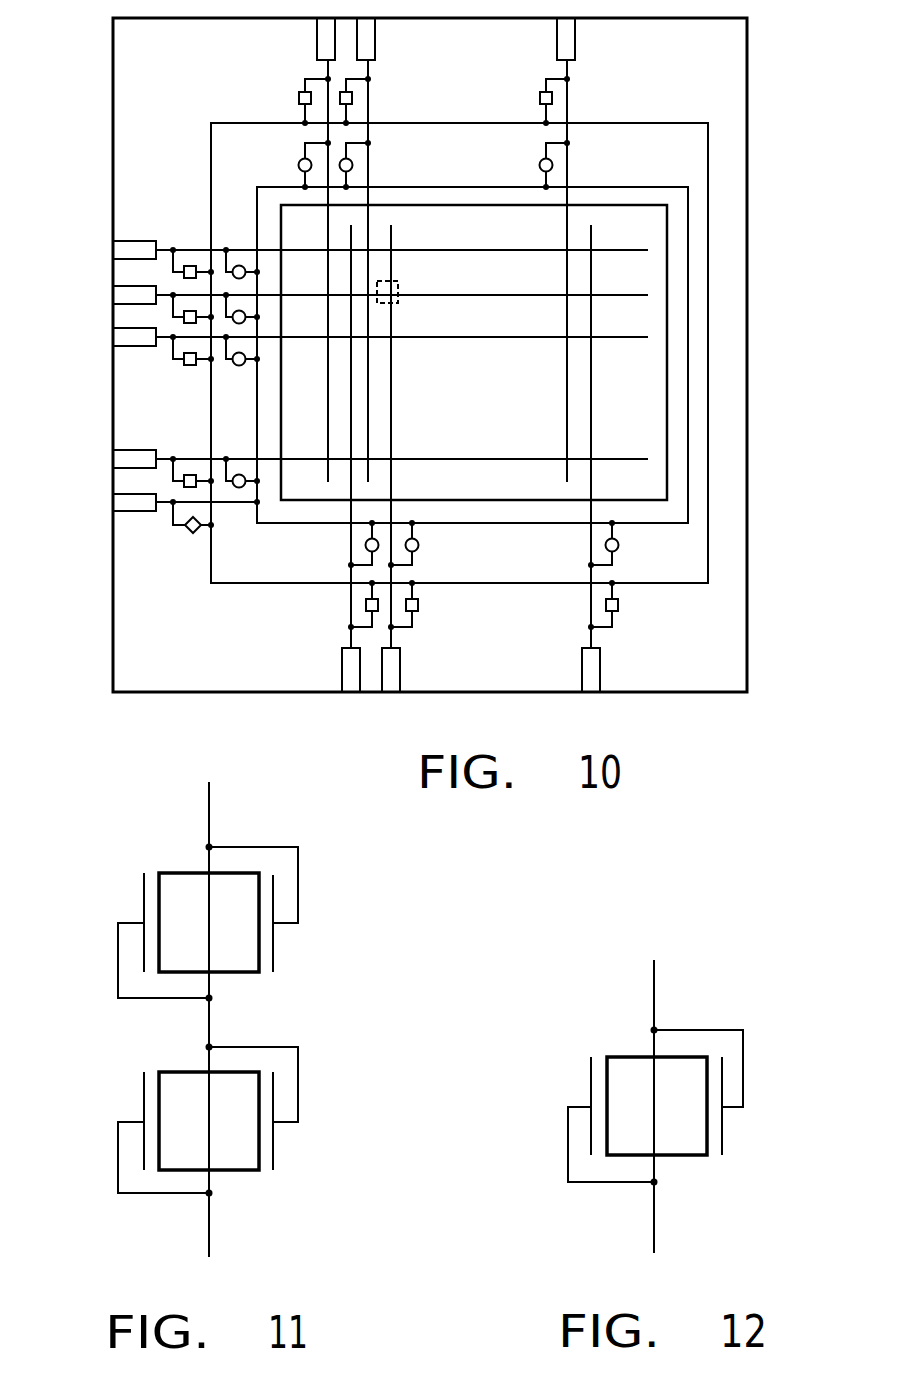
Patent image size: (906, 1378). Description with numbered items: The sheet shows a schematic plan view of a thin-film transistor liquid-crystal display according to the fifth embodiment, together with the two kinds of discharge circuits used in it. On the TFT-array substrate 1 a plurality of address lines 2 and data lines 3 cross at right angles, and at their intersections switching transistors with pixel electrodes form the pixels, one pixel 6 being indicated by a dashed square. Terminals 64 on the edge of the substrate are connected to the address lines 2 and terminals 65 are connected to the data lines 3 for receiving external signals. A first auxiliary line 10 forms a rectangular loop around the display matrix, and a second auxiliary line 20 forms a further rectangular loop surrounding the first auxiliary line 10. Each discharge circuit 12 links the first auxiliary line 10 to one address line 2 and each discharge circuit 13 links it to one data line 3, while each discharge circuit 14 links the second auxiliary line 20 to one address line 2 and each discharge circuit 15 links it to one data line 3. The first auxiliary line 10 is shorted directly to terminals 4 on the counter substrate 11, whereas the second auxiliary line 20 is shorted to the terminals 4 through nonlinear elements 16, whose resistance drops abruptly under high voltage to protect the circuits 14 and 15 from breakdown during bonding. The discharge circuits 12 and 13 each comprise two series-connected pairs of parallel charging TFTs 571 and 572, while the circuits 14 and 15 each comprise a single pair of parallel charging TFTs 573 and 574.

In FIG. 10, the TFT-array substrate 1 is at (112, 212).
In FIG. 10, the address lines 2 is at (317, 293).
In FIG. 10, the data lines 3 is at (390, 395).
In FIG. 10, the terminals 4 is at (138, 512).
In FIG. 10, the pixel 6 is at (398, 285).
In FIG. 10, the first auxiliary line 10 is at (285, 525).
In FIG. 10, the counter substrate 11 is at (440, 205).
In FIG. 10, the discharge circuit 12 is at (238, 367).
In FIG. 10, the discharge circuit 13 is at (419, 545).
In FIG. 10, the discharge circuit 14 is at (188, 367).
In FIG. 10, the discharge circuit 15 is at (419, 605).
In FIG. 10, the nonlinear element 16 is at (193, 533).
In FIG. 10, the second auxiliary line 20 is at (282, 586).
In FIG. 10, the terminals 64 is at (140, 242).
In FIG. 10, the terminals 65 is at (376, 46).
In FIG. 11, the charging TFT 571 is at (290, 931).
In FIG. 11, the charging TFT 572 is at (137, 1098).
In FIG. 12, the charging TFT 573 is at (733, 1122).
In FIG. 12, the charging TFT 574 is at (560, 1135).